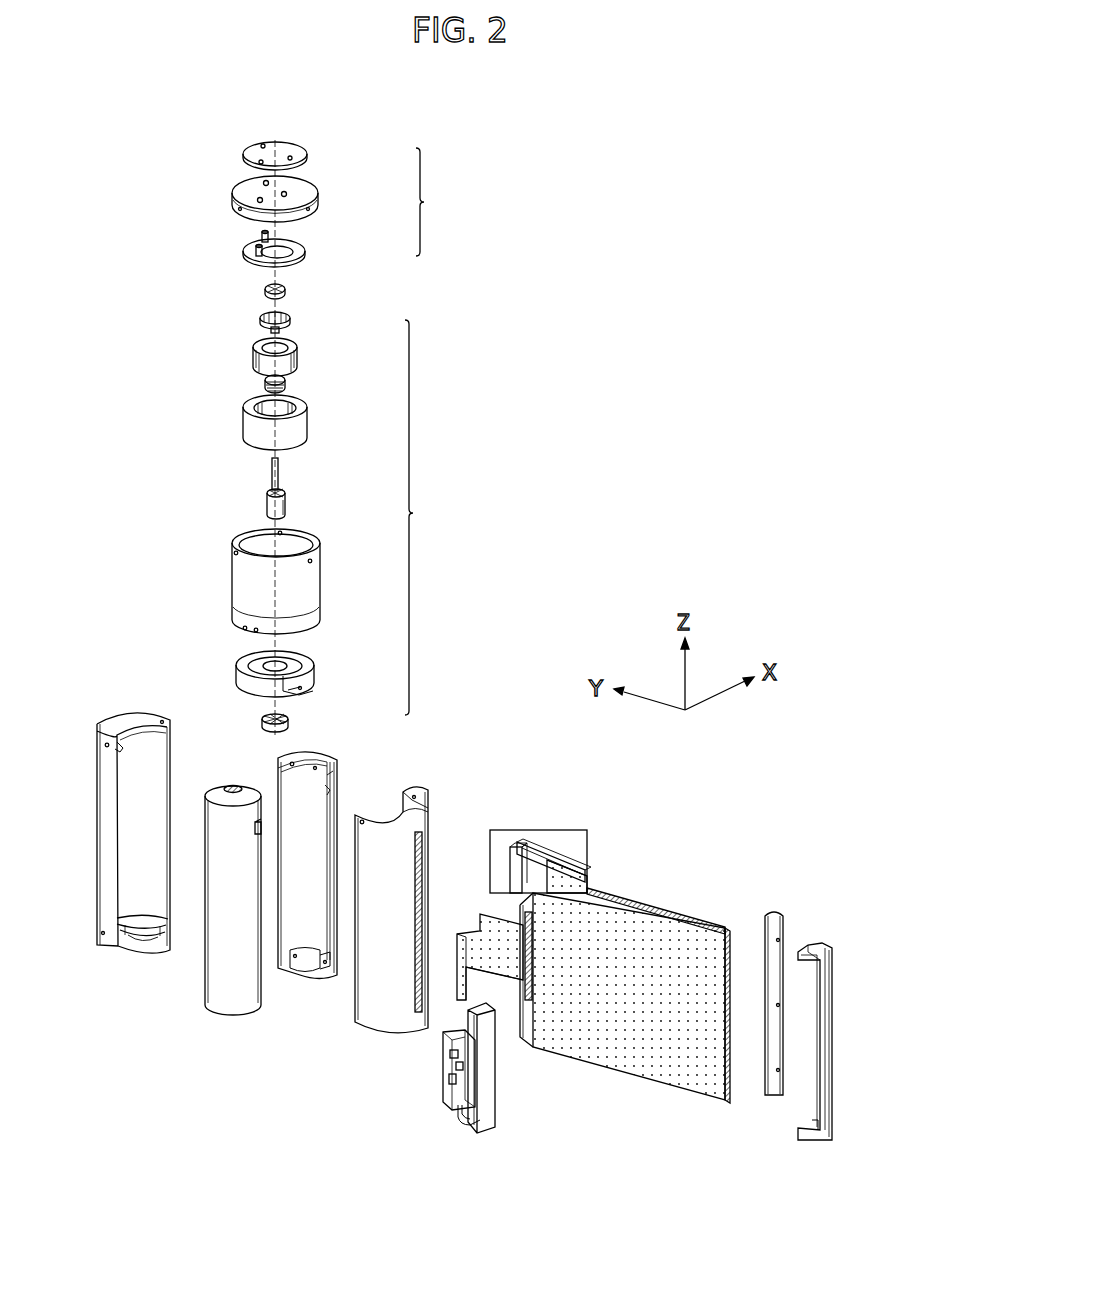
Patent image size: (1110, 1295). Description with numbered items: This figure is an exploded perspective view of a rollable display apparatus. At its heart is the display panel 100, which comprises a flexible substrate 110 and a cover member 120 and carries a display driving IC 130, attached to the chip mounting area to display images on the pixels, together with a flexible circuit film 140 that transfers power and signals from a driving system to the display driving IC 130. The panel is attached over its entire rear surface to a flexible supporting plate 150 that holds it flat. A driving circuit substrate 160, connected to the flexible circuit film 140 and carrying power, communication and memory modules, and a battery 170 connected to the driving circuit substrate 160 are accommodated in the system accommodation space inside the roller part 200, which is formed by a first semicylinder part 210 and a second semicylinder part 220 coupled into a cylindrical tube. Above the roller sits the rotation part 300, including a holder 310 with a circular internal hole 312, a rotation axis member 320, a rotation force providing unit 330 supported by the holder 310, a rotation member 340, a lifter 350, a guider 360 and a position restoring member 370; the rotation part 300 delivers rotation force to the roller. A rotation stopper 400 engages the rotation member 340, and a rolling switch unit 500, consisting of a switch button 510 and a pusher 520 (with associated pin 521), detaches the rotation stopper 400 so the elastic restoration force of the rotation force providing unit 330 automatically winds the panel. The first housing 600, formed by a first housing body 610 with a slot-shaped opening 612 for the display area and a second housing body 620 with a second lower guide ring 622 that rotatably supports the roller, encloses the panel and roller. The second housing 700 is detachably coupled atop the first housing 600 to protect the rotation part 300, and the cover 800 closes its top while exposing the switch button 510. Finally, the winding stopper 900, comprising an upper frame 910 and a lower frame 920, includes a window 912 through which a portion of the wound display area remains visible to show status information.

The display panel 100 is at (583, 980).
The flexible substrate 110 is at (517, 846).
The cover member 120 is at (575, 868).
The display driving integrated circuit 130 is at (524, 993).
The flexible circuit film 140 is at (467, 930).
The flexible supporting plate 150 is at (546, 849).
The driving circuit substrate 160 is at (456, 1100).
The battery 170 is at (492, 1120).
The roller part 200 is at (255, 935).
The first semicylinder part 210 is at (302, 972).
The second semicylinder part 220 is at (224, 1008).
The rotation part 300 is at (429, 517).
The holder 310 is at (316, 665).
The circular internal hole 312 is at (287, 664).
The rotation axis member 320 is at (288, 500).
The rotation force providing unit 330 is at (289, 721).
The rotation member 340 is at (291, 319).
The lifter 350 is at (298, 345).
The guider 360 is at (301, 428).
The position restoring member 370 is at (286, 384).
The rotation stopper 400 is at (266, 292).
The rolling switch unit 500 is at (438, 202).
The switch button 510 is at (306, 150).
The pusher 520 is at (324, 245).
The pin 521 is at (296, 242).
The first housing 600 is at (120, 820).
The first housing body 610 is at (421, 914).
The opening 612 is at (418, 1000).
The second housing body 620 is at (120, 870).
The second lower guide ring 622 is at (150, 940).
The second housing 700 is at (240, 589).
The cover 800 is at (232, 206).
The winding stopper 900 is at (794, 966).
The upper frame 910 is at (794, 989).
The window 912 is at (810, 1120).
The lower frame 920 is at (775, 913).